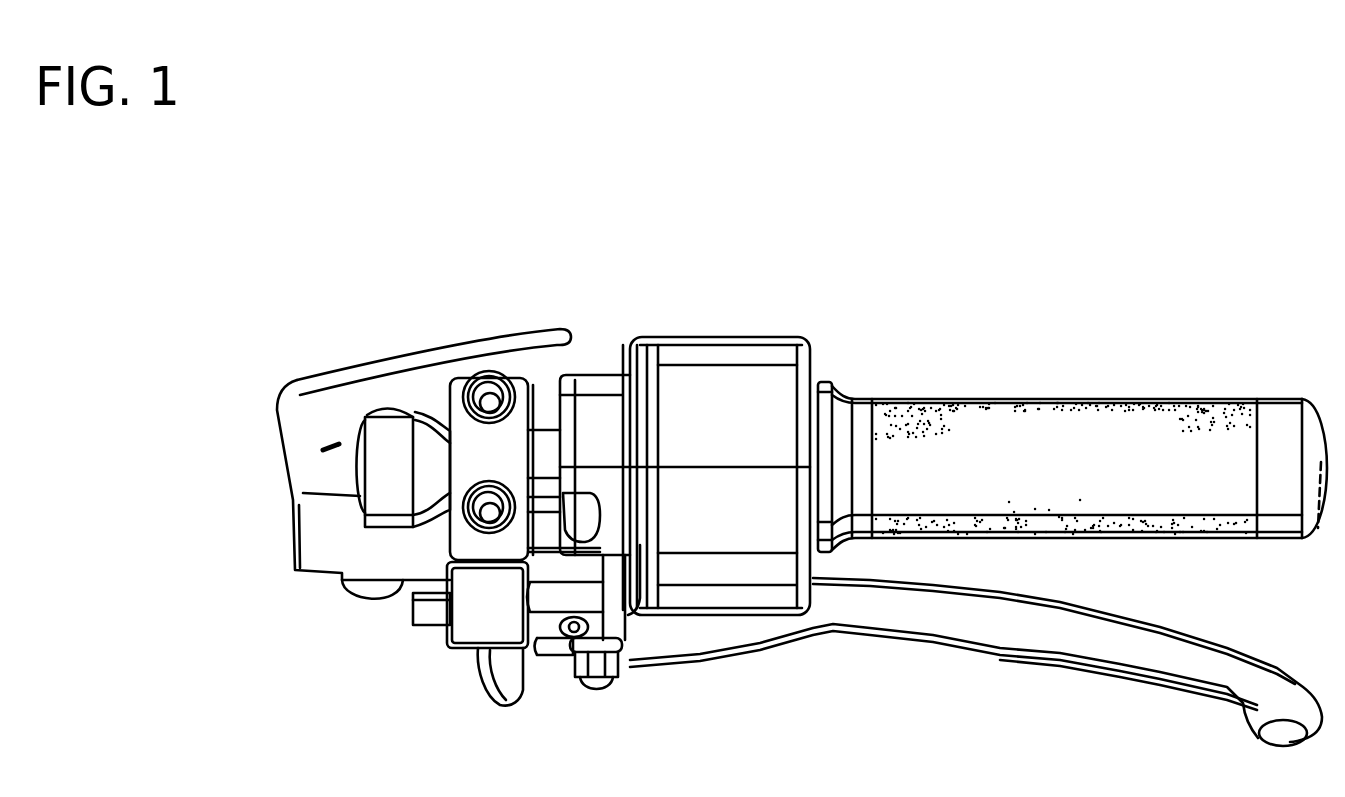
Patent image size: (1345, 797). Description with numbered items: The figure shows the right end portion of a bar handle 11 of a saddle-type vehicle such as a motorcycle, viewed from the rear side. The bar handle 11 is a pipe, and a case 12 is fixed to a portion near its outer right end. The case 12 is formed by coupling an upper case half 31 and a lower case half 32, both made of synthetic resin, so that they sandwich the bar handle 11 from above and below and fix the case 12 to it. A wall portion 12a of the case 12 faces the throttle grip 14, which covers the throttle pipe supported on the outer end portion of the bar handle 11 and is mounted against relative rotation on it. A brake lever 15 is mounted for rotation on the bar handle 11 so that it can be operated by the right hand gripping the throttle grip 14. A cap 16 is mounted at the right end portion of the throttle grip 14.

The bar handle 11 is at (548, 447).
The case 12 is at (685, 395).
The upper case half 31 is at (680, 375).
The lower case half 32 is at (758, 495).
The wall portion 12a is at (815, 369).
The throttle grip 14 is at (1079, 437).
The brake lever 15 is at (1052, 637).
The cap 16 is at (1290, 415).